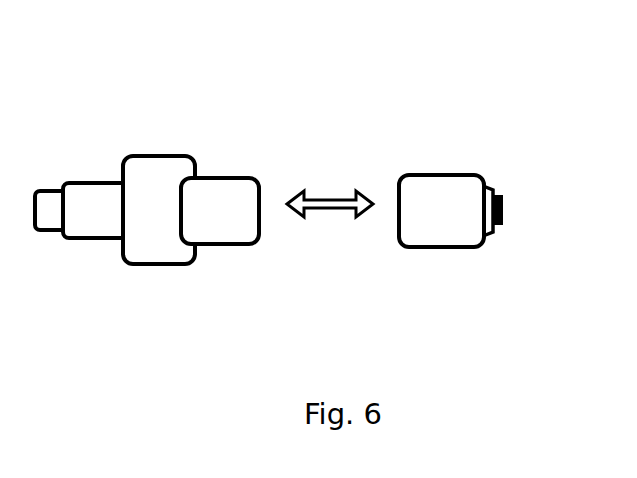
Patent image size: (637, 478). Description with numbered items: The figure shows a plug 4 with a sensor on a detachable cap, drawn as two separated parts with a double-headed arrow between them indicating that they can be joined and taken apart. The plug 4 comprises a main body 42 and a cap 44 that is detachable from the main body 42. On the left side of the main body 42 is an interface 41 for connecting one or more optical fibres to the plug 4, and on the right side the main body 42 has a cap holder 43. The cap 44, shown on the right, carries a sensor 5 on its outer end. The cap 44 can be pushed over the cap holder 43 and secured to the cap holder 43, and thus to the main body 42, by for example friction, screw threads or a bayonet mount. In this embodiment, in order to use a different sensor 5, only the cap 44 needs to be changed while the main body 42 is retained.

The plug 4 is at (360, 93).
The interface 41 is at (46, 186).
The main body 42 is at (163, 142).
The cap holder 43 is at (237, 246).
The cap 44 is at (435, 175).
The sensor 5 is at (503, 212).